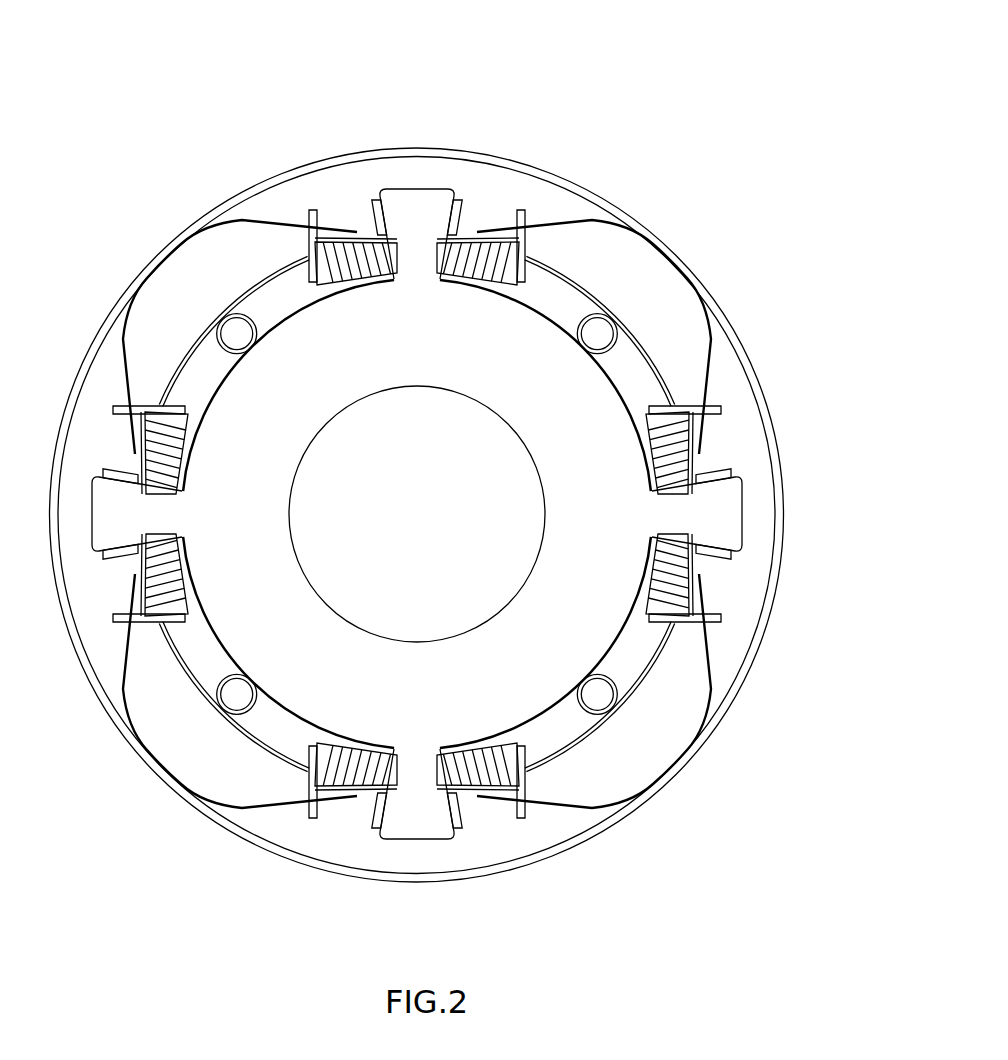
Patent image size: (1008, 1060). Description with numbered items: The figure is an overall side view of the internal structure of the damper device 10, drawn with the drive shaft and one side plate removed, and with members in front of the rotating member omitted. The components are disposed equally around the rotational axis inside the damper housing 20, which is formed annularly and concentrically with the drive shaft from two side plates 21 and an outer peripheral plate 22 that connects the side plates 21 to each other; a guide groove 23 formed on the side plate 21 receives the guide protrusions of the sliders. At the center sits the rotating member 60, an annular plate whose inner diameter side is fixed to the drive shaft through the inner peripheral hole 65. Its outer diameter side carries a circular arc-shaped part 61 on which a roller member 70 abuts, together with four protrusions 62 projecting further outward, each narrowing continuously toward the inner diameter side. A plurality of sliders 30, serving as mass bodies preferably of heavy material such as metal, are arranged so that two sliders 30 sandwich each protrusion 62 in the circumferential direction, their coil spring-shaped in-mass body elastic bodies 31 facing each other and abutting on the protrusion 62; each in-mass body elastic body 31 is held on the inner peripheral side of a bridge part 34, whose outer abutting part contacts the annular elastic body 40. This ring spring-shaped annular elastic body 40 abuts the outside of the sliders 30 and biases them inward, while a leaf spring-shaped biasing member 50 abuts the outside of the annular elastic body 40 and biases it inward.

The damper device 10 is at (730, 128).
The damper housing 20 is at (378, 48).
The side plate 21 is at (385, 178).
The outer peripheral plate 22 is at (330, 168).
The guide groove 23 is at (521, 245).
The slider 30 is at (673, 387).
The in-mass body elastic body 31 is at (697, 462).
The bridge part 34 is at (697, 437).
The annular elastic body 40 is at (555, 322).
The biasing member 50 is at (577, 223).
The rotating member 60 is at (483, 413).
The circular arc-shaped part 61 is at (572, 302).
The protrusion 62 is at (745, 507).
The inner peripheral hole 65 is at (520, 447).
The roller member 70 is at (617, 350).